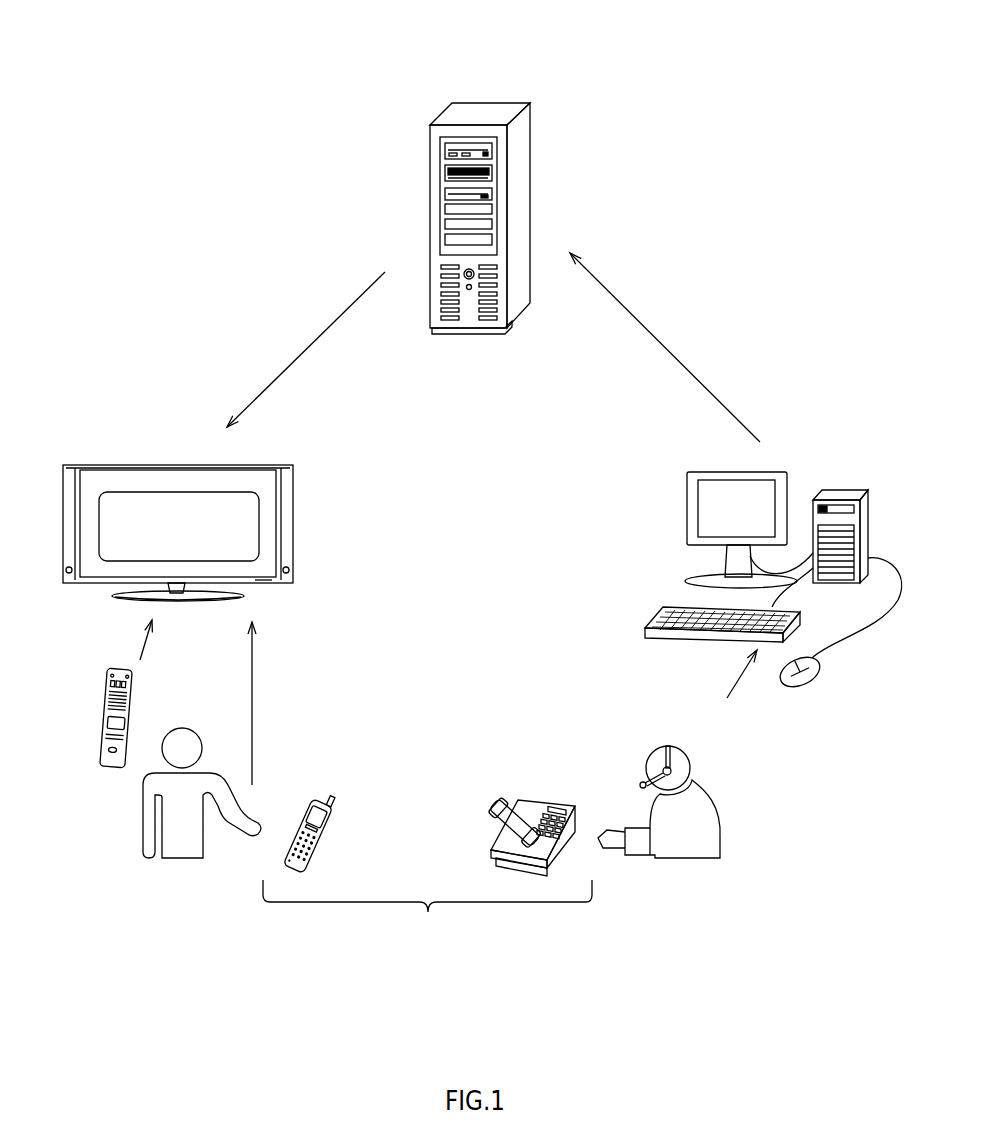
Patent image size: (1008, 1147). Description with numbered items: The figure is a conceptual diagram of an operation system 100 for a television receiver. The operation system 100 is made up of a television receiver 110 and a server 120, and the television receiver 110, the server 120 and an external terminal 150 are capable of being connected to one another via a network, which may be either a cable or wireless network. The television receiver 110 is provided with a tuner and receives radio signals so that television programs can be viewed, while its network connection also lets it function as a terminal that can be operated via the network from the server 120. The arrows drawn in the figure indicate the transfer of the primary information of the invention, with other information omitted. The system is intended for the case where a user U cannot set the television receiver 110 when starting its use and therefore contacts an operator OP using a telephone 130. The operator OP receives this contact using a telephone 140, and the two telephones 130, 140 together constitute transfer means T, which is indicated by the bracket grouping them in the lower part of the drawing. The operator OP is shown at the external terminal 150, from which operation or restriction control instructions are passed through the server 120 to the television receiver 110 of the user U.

The operation system for a television receiver 100 is at (480, 49).
The television receiver 110 is at (295, 521).
The server 120 is at (532, 201).
The telephone 130 is at (320, 791).
The telephone 140 is at (542, 801).
The external terminal 150 is at (840, 489).
The user U is at (141, 815).
The operator OP is at (723, 828).
The transfer means T is at (427, 910).